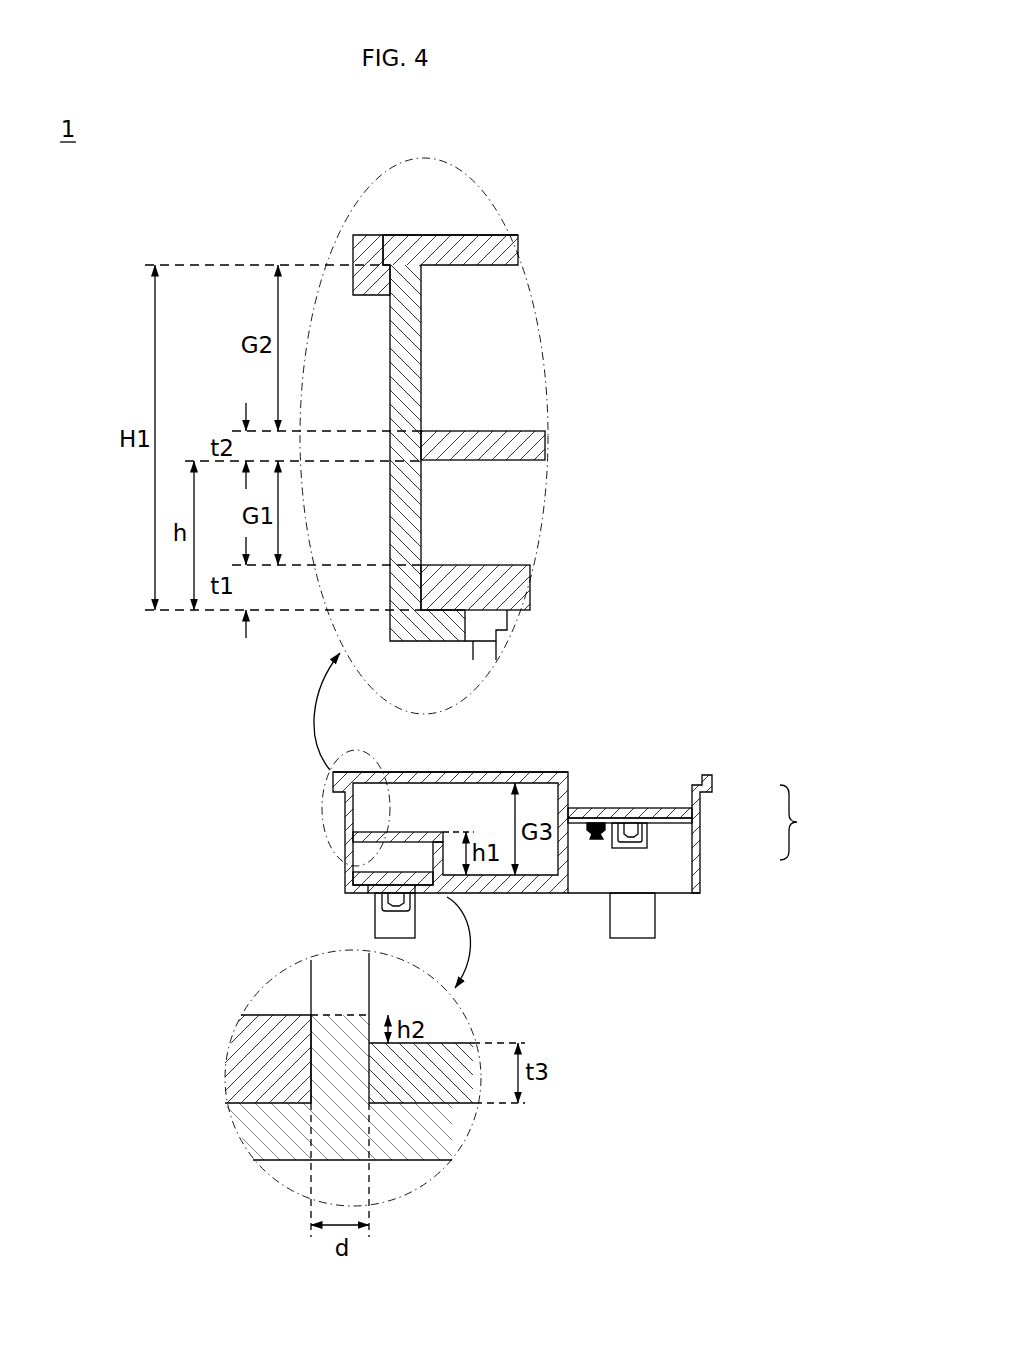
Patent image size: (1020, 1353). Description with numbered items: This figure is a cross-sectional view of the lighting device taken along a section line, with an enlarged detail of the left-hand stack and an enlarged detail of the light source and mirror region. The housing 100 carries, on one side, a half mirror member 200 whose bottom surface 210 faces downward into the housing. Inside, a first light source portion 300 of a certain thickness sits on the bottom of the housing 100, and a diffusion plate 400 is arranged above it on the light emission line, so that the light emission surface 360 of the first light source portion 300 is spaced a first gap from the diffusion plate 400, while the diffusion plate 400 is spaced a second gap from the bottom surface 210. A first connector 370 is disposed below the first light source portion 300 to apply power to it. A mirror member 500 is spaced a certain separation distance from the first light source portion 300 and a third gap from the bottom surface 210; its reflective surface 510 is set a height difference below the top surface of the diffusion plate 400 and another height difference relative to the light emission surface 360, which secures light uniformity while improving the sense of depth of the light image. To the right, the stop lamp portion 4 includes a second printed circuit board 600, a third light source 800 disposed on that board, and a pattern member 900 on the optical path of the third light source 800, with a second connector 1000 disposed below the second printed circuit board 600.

The housing 100 is at (360, 231).
The half mirror member 200 is at (480, 231).
The bottom surface of the half mirror member 210 is at (495, 266).
The first light source portion 300 is at (508, 592).
The light emission surface 360 is at (268, 1013).
The first connector 370 is at (378, 895).
The diffusion plate 400 is at (535, 447).
The mirror member 500 is at (411, 1090).
The reflective surface 510 is at (462, 1043).
The second printed circuit board 600 is at (672, 823).
The third light source 800 is at (660, 812).
The pattern member 900 is at (693, 805).
The stop lamp portion 4 is at (796, 822).
The second connector 1000 is at (640, 840).